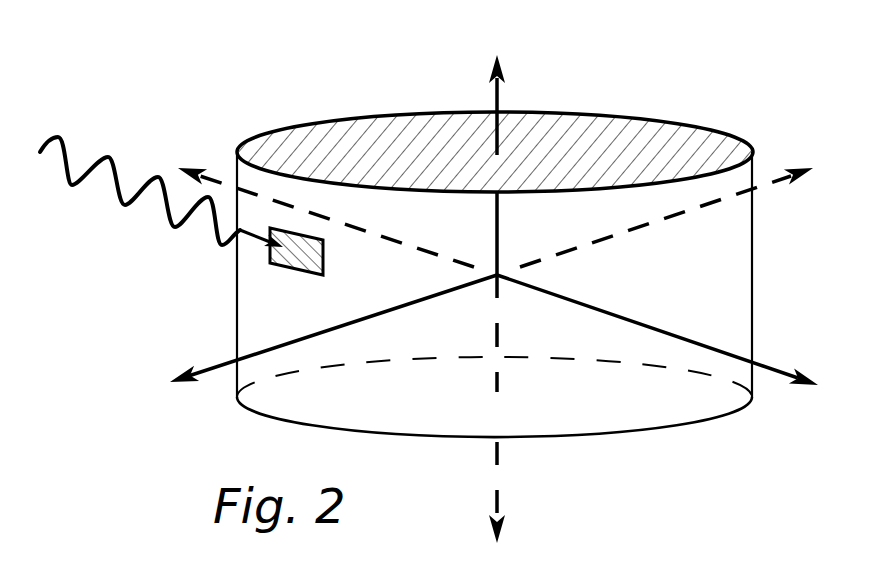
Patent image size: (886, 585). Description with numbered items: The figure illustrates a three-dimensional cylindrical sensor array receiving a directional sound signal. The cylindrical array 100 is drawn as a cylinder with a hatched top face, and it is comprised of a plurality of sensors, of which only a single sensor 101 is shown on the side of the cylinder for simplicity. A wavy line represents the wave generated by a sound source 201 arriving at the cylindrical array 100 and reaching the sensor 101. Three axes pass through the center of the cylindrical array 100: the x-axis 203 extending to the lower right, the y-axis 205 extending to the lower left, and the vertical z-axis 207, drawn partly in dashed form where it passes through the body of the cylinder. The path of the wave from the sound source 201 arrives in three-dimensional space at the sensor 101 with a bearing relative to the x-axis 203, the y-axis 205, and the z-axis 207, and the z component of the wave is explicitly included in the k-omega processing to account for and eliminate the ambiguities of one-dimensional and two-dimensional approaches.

The cylindrical array 100 is at (667, 118).
The sensor 101 is at (323, 243).
The sound source 201 is at (144, 221).
The x-axis 203 is at (782, 371).
The y-axis 205 is at (221, 363).
The z-axis 207 is at (494, 101).